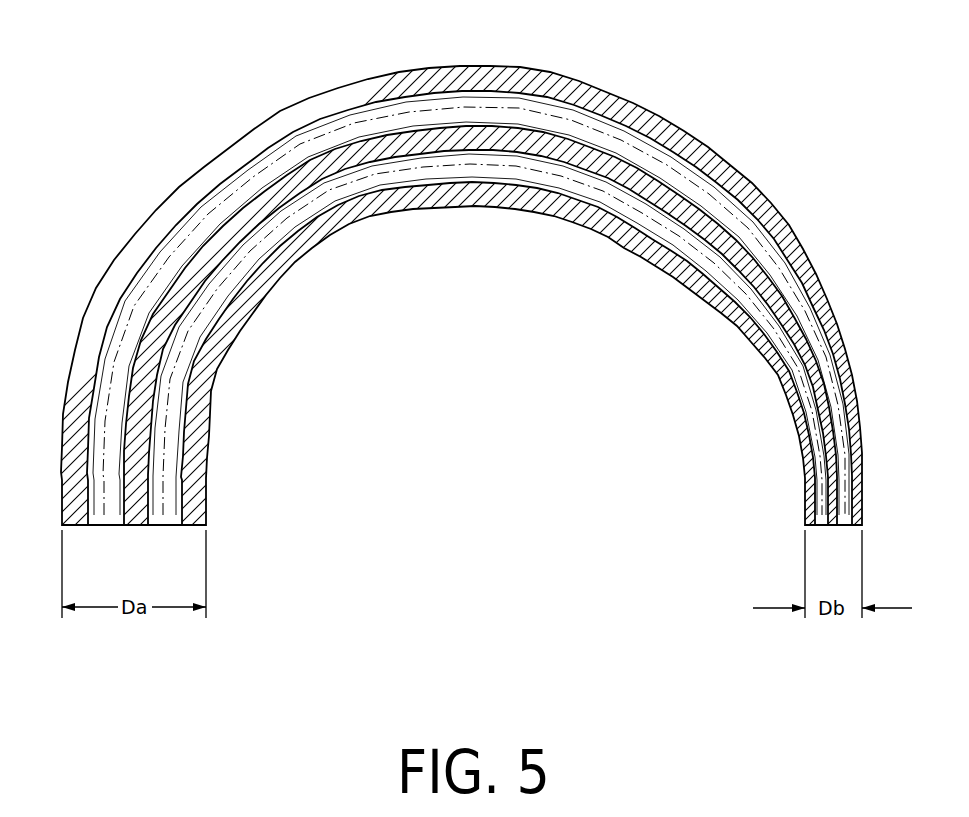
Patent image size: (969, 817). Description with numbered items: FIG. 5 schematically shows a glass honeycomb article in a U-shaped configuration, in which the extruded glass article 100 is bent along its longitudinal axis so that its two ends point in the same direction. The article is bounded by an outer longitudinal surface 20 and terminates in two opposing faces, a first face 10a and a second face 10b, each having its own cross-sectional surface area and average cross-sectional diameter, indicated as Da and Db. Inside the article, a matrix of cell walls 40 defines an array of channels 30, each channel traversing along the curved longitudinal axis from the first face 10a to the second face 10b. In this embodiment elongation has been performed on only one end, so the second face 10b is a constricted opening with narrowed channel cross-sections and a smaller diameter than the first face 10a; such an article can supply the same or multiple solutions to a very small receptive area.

The extruded glass article 100 is at (484, 302).
The outer longitudinal surface 20 is at (144, 221).
The channels 30 is at (313, 145).
The cell walls 40 is at (222, 165).
The first face 10a is at (172, 527).
The second face 10b is at (823, 526).